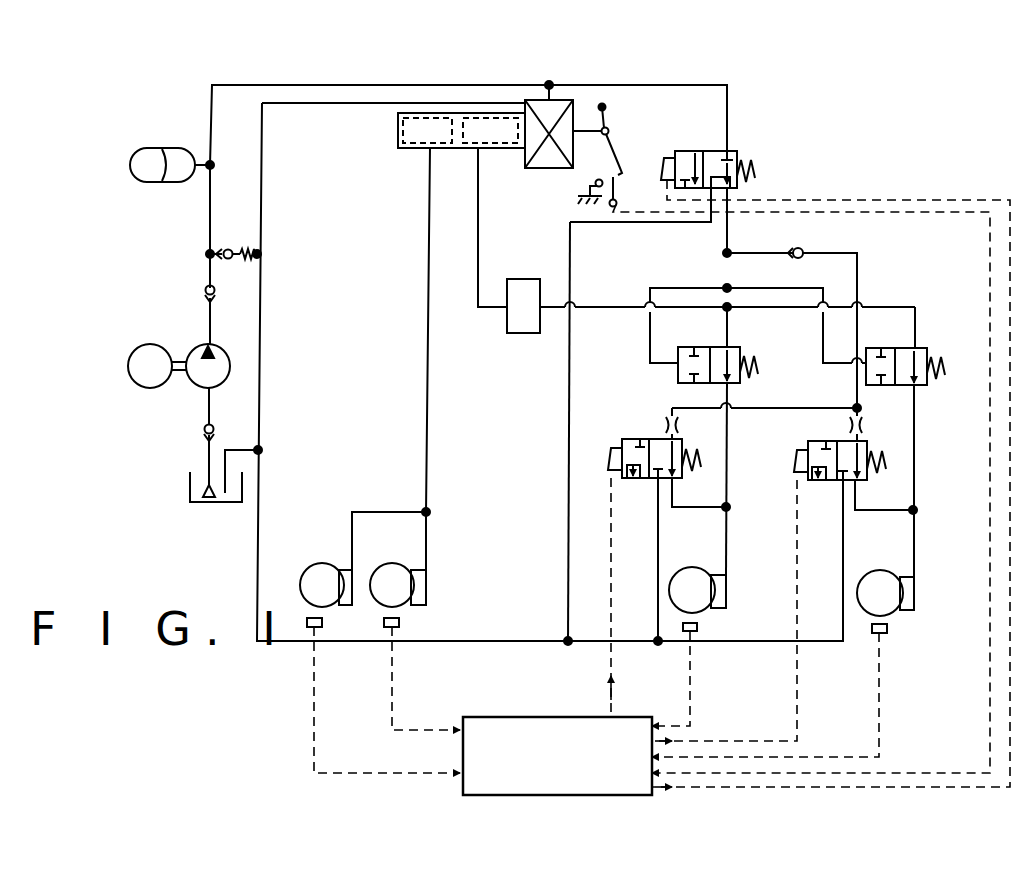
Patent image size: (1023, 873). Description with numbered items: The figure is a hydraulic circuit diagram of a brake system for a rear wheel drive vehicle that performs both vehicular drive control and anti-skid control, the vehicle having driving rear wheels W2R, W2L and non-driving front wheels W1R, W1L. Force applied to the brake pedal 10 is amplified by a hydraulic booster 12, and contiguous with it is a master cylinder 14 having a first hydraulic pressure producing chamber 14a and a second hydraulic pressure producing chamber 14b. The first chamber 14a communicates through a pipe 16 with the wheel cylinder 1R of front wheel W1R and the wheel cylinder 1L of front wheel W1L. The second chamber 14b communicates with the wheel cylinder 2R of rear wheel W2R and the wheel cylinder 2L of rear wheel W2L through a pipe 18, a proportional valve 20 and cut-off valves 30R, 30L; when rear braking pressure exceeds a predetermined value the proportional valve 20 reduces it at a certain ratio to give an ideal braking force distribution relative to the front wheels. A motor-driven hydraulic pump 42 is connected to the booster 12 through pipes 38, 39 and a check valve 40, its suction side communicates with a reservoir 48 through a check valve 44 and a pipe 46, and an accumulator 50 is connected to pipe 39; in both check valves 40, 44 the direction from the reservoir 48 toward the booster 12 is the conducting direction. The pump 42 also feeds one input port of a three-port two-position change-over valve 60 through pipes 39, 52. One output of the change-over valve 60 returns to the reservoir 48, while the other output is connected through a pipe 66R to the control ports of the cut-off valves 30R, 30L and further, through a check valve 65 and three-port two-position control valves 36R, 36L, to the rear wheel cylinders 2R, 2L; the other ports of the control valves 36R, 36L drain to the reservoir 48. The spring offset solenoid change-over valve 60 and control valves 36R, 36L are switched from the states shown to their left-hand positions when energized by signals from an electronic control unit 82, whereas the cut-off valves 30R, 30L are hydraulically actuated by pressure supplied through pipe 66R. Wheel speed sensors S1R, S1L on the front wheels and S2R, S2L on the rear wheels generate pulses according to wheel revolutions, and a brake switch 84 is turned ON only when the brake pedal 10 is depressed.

The brake pedal 10 is at (626, 160).
The hydraulic booster 12 is at (562, 100).
The master cylinder 14 is at (398, 146).
The first hydraulic pressure producing chamber 14a is at (403, 130).
The second hydraulic pressure producing chamber 14b is at (470, 148).
The pipe 16 is at (428, 186).
The pipe 18 is at (478, 197).
The proportional valve 20 is at (517, 333).
The cut-off valve 30R is at (740, 348).
The cut-off valve 30L is at (926, 350).
The control valve 36R is at (633, 478).
The control valve 36L is at (820, 481).
The pipe 38 is at (545, 84).
The pipe 39 is at (245, 85).
The check valve 40 is at (206, 286).
The motor-driven hydraulic pump 42 is at (196, 350).
The check valve 44 is at (205, 430).
The pipe 46 is at (208, 454).
The reservoir 48 is at (210, 504).
The accumulator 50 is at (175, 148).
The pipe 52 is at (638, 85).
The change-over valve 60 is at (737, 153).
The check valve 65 is at (800, 248).
The pipe 66R is at (727, 279).
The electronic control unit 82 is at (572, 717).
The brake switch 84 is at (621, 196).
The wheel cylinder 1R is at (343, 570).
The wheel cylinder 1L is at (420, 583).
The wheel cylinder 2R is at (722, 583).
The wheel cylinder 2L is at (908, 590).
The front wheel W1R is at (312, 568).
The front wheel W1L is at (388, 572).
The rear wheel W2R is at (692, 572).
The rear wheel W2L is at (880, 575).
The non-driving wheel speed sensor S1R is at (322, 623).
The non-driving wheel speed sensor S1L is at (399, 623).
The driving wheel speed sensor S2R is at (697, 627).
The driving wheel speed sensor S2L is at (887, 629).